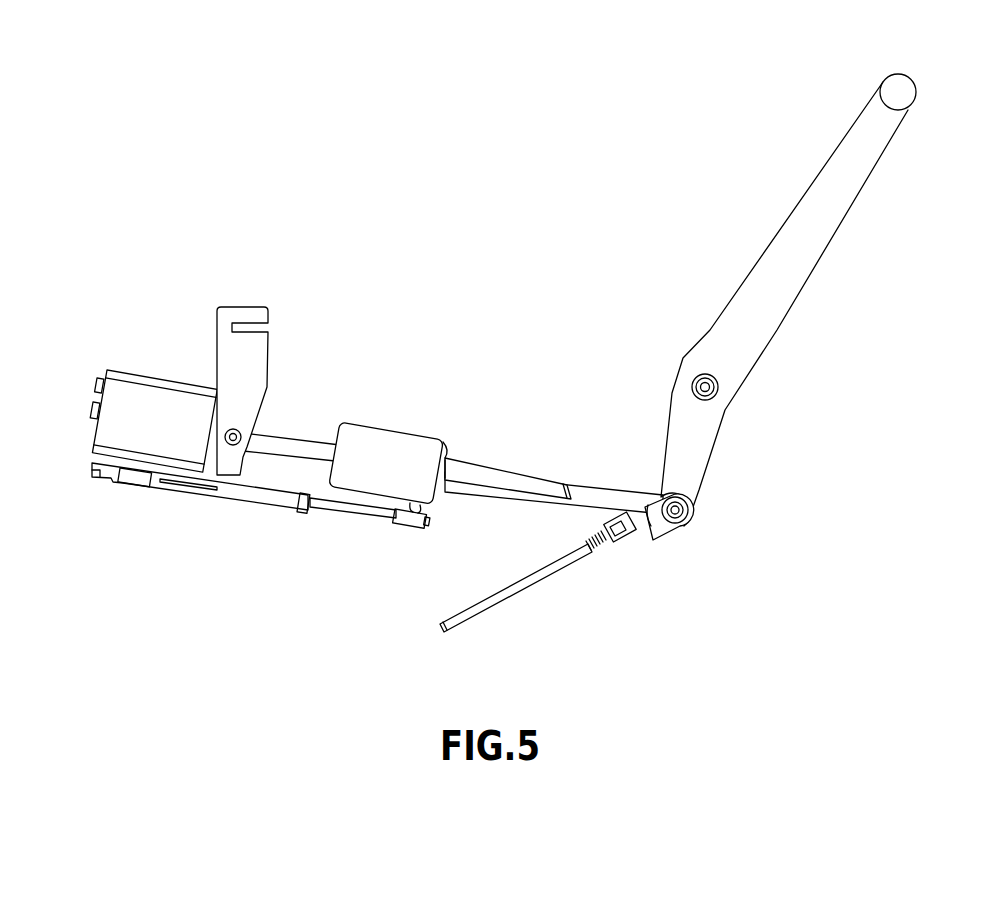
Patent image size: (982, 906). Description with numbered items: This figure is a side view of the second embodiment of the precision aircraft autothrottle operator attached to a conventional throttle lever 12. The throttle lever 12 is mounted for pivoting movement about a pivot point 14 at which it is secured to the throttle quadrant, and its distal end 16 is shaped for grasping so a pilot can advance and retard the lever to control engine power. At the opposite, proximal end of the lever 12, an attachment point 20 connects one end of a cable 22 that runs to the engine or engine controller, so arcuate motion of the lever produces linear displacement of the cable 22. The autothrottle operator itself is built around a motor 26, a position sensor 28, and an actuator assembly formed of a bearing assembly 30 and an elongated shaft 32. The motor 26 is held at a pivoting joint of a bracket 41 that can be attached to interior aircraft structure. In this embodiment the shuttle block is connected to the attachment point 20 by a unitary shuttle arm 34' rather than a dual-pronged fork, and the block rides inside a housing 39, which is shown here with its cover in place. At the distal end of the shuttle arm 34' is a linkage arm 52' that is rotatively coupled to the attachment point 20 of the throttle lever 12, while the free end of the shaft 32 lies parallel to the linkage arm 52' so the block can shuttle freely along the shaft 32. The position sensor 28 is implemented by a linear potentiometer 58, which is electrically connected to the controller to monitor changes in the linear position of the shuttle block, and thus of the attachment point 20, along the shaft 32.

The throttle lever 12 is at (856, 238).
The pivot point 14 is at (718, 390).
The distal end 16 is at (917, 82).
The attachment point 20 is at (688, 518).
The cable 22 is at (515, 593).
The motor 26 is at (113, 434).
The position sensor 28 is at (169, 502).
The bearing assembly 30 is at (408, 418).
The shaft 32 is at (284, 445).
The shuttle arm 34' is at (507, 452).
The housing 39 is at (356, 433).
The bracket 41 is at (228, 318).
The linkage arm 52' is at (554, 475).
The linear potentiometer 58 is at (242, 495).